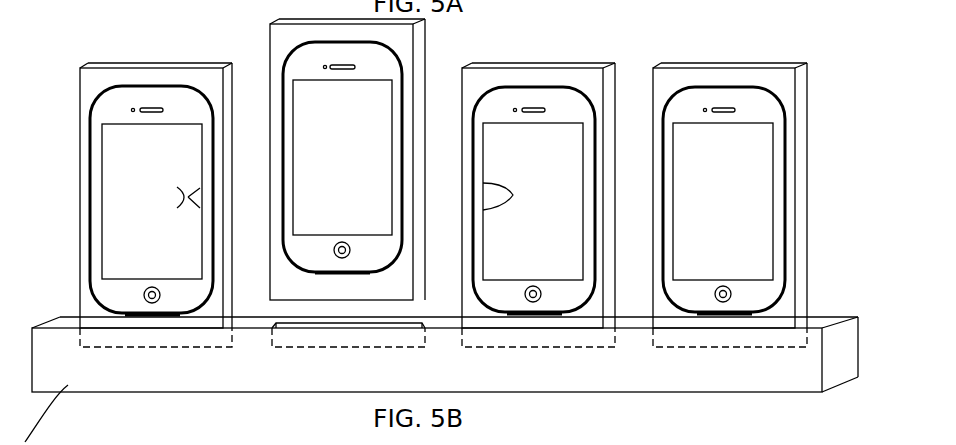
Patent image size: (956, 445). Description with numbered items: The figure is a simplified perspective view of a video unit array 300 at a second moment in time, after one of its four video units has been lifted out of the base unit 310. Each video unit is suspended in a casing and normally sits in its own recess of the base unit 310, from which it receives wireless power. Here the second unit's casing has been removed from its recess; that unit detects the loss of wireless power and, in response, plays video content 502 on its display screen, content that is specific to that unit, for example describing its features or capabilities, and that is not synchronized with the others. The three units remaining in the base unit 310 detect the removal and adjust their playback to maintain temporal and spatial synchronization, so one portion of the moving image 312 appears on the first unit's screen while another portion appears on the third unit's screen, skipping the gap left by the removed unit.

The video unit array 300 is at (53, 208).
The base unit 310 is at (32, 0).
The moving image 312 is at (183, 214).
The video content 502 is at (338, 137).